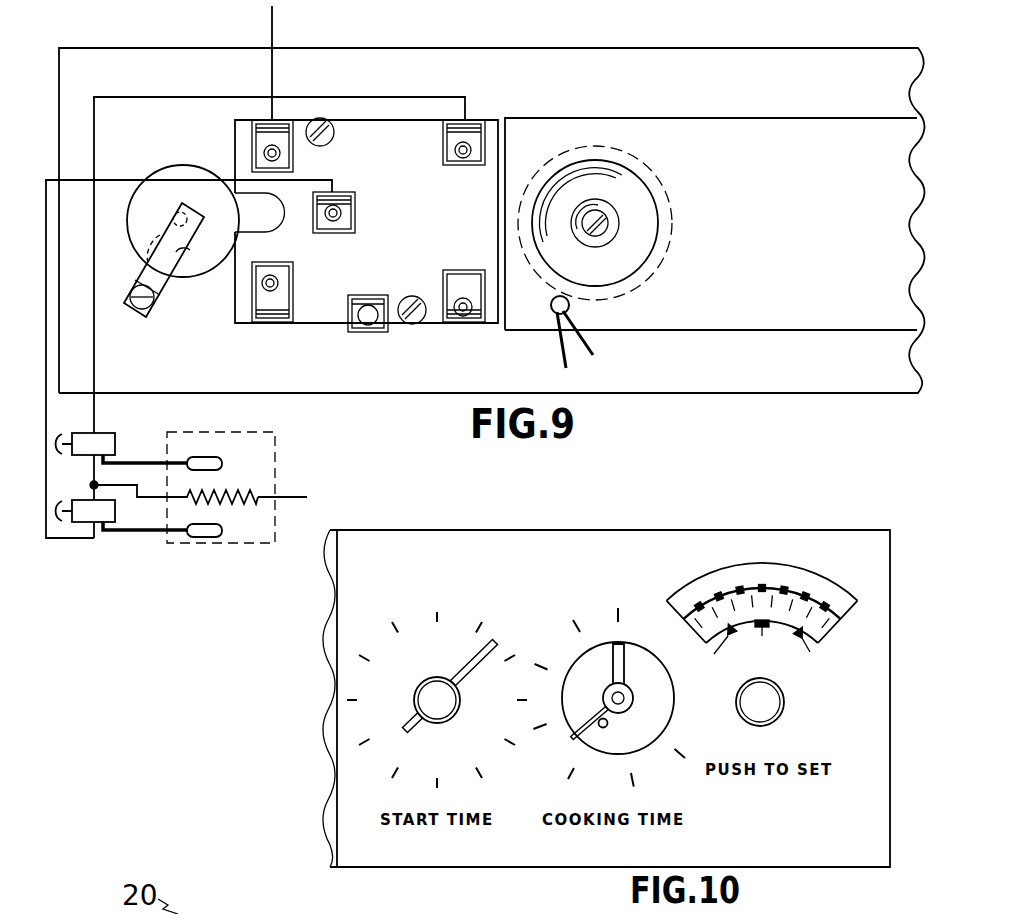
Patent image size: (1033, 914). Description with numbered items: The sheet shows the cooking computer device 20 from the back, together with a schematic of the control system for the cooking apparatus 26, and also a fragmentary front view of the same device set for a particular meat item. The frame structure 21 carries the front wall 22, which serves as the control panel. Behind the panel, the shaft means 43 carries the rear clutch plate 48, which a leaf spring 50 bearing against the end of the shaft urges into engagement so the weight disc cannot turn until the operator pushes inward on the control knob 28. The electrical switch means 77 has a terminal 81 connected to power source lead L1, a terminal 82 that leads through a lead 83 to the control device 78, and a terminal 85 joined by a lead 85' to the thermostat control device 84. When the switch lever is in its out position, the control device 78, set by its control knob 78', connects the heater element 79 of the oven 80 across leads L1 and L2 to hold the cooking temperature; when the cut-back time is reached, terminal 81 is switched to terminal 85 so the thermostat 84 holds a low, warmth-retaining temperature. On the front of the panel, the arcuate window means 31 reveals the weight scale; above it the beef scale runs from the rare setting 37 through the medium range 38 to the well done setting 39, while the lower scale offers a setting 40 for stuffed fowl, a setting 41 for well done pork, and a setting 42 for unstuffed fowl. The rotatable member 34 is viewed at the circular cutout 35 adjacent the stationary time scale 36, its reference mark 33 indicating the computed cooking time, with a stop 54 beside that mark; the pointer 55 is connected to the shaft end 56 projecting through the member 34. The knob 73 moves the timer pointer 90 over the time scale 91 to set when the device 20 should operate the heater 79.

In FIG. 9, the cooking computer device 20 is at (845, 40).
In FIG. 10, the cooking computer device 20 is at (828, 521).
In FIG. 9, the frame structure 21 is at (192, 48).
In FIG. 9, the lead 83 is at (153, 97).
In FIG. 9, the power source lead L1 is at (288, 61).
In FIG. 9, the terminal 81 is at (276, 122).
In FIG. 9, the electrical switch means 77 is at (378, 128).
In FIG. 9, the terminal 82 is at (465, 118).
In FIG. 9, the lead 85' is at (189, 325).
In FIG. 9, the rear clutch plate 48 is at (183, 167).
In FIG. 9, the terminal 85 is at (361, 192).
In FIG. 9, the shaft means 43 is at (135, 255).
In FIG. 9, the leaf spring 50 is at (177, 253).
In FIG. 9, the control knob 78' is at (100, 421).
In FIG. 9, the control device 78 is at (147, 446).
In FIG. 9, the cooking apparatus 26 is at (270, 427).
In FIG. 9, the heater element 79 is at (233, 492).
In FIG. 9, the power source lead L2 is at (297, 500).
In FIG. 9, the control device 84 is at (93, 523).
In FIG. 9, the oven 80 is at (225, 544).
In FIG. 10, the timer pointer 90 is at (468, 652).
In FIG. 10, the stationary time scale 36 is at (553, 651).
In FIG. 10, the pointer 55 is at (613, 652).
In FIG. 10, the rare setting 37 is at (677, 575).
In FIG. 10, the arcuate window means 31 is at (712, 570).
In FIG. 10, the medium range 38 is at (755, 565).
In FIG. 10, the well done setting 39 is at (823, 603).
In FIG. 10, the setting for well done pork 41 is at (800, 632).
In FIG. 10, the setting for unstuffed fowl 42 is at (718, 642).
In FIG. 10, the setting for stuffed fowl 40 is at (788, 645).
In FIG. 10, the control knob 28 is at (782, 712).
In FIG. 10, the time scale 91 is at (383, 633).
In FIG. 10, the knob 73 is at (415, 688).
In FIG. 10, the end of shaft 56 is at (633, 698).
In FIG. 10, the rotatable member 34 is at (652, 718).
In FIG. 10, the reference mark 33 is at (566, 722).
In FIG. 10, the stop 54 is at (605, 728).
In FIG. 10, the circular cutout 35 is at (647, 748).
In FIG. 10, the front wall 22 is at (803, 860).